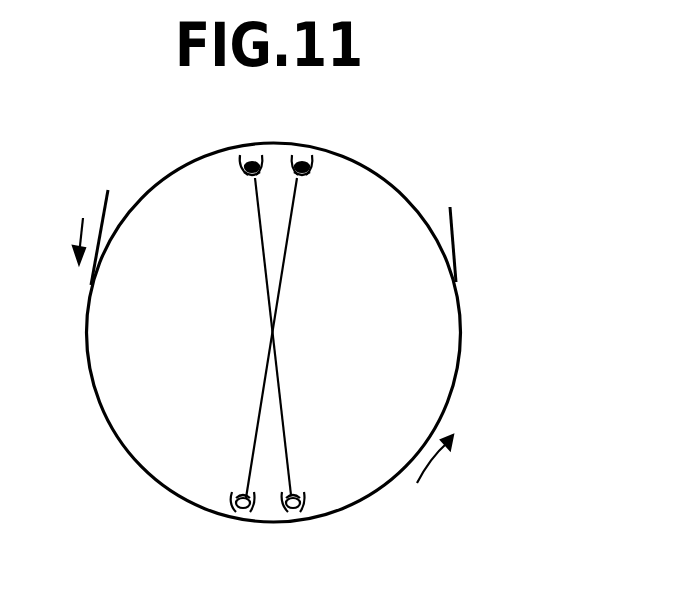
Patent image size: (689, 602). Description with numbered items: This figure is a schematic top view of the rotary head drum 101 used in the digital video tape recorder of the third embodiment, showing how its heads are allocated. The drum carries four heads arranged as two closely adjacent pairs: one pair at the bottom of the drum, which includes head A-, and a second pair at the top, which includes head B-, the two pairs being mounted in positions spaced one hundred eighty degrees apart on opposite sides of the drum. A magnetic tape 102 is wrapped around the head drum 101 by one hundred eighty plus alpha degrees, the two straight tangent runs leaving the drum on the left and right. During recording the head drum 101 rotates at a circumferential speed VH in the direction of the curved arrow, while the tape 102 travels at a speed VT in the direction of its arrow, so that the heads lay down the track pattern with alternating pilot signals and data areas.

The rotary head drum 101 is at (390, 206).
The magnetic tape 102 is at (452, 238).
The head B− B- is at (304, 163).
The head A− A- is at (236, 507).
The tape speed VT is at (68, 235).
The circumferential speed VH is at (440, 469).